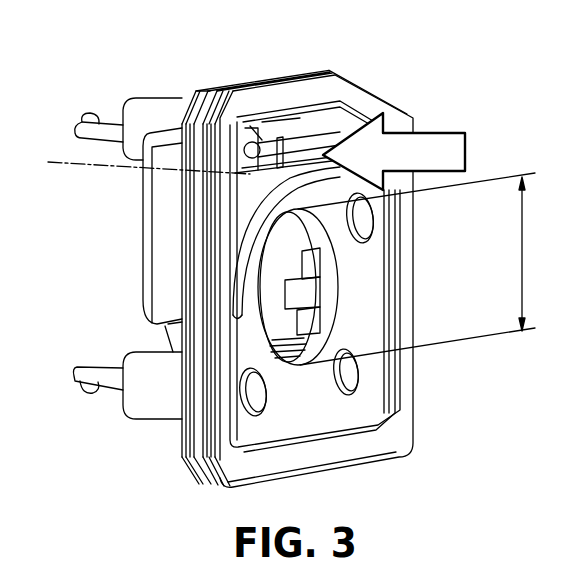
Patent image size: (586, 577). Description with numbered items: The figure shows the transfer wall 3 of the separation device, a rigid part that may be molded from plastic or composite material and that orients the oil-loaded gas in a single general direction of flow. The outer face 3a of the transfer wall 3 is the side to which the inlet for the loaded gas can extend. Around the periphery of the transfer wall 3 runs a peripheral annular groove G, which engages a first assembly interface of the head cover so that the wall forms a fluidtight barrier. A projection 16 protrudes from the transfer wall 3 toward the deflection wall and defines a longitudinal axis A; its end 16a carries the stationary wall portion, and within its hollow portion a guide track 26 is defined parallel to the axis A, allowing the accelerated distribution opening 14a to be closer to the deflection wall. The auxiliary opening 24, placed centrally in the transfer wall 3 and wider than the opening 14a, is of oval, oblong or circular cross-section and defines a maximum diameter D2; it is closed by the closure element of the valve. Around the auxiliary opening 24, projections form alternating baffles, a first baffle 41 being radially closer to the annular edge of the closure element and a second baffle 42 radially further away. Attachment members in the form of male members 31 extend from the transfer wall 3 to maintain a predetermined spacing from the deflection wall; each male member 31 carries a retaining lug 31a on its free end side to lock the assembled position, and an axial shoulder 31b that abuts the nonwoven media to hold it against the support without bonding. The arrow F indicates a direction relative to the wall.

The transfer wall 3 is at (423, 462).
The outer face of the transfer wall 3a is at (328, 417).
The accelerated distribution opening 14a is at (280, 130).
The projection 16 is at (163, 212).
The end of the projection 16a is at (143, 260).
The auxiliary opening 24 is at (330, 312).
The guide track 26 is at (310, 147).
The male member 31 is at (164, 97).
The retaining lug 31a is at (98, 115).
The axial shoulder 31b is at (128, 107).
The baffle 41 is at (312, 295).
The baffle 42 is at (300, 258).
The longitudinal axis A is at (62, 170).
The insertion force F is at (438, 147).
The peripheral annular groove G is at (210, 83).
The maximum diameter D2 is at (431, 269).